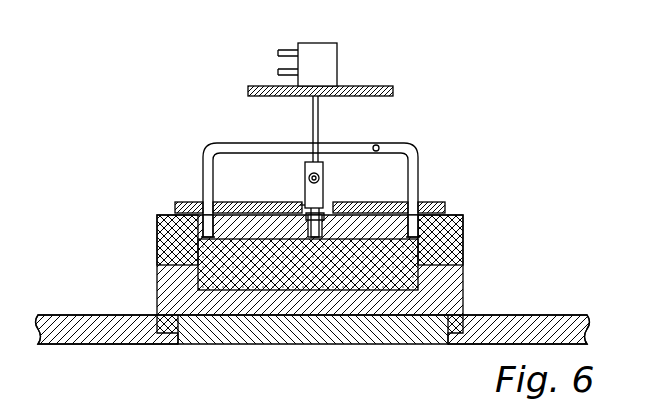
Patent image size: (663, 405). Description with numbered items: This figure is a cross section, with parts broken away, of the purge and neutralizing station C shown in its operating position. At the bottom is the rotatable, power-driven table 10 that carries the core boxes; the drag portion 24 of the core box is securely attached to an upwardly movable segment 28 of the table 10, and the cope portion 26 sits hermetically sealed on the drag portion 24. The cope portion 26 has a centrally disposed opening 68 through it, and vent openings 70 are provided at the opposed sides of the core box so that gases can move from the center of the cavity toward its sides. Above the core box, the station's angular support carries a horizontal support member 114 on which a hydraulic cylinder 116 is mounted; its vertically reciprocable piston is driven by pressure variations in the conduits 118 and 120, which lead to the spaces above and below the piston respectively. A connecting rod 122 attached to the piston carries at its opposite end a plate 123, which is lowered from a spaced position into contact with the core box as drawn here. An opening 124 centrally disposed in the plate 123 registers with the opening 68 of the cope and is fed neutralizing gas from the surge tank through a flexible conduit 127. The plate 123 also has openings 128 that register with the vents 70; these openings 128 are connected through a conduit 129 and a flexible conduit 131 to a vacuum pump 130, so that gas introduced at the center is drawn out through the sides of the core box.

The table 10 is at (523, 320).
The drag portion 24 is at (455, 296).
The cope portion 26 is at (440, 253).
The upwardly movable segment 28 is at (330, 344).
The opening 68 is at (297, 219).
The vent openings 70 is at (172, 214).
The horizontal support member 114 is at (374, 86).
The hydraulic cylinder 116 is at (324, 64).
The conduit 118 is at (280, 53).
The conduit 120 is at (278, 72).
The connecting rod 122 is at (318, 130).
The plate 123 is at (440, 201).
The opening 124 is at (322, 197).
The flexible conduit 127 is at (321, 176).
The openings 128 is at (206, 206).
The conduit 129 is at (418, 161).
The vacuum pump 130 is at (304, 206).
The flexible conduit 131 is at (379, 147).
The neutralizing station C is at (156, 237).